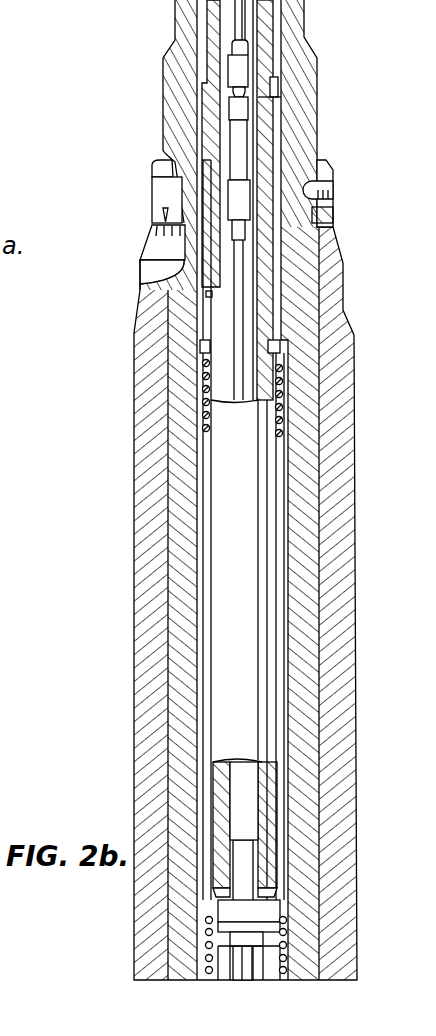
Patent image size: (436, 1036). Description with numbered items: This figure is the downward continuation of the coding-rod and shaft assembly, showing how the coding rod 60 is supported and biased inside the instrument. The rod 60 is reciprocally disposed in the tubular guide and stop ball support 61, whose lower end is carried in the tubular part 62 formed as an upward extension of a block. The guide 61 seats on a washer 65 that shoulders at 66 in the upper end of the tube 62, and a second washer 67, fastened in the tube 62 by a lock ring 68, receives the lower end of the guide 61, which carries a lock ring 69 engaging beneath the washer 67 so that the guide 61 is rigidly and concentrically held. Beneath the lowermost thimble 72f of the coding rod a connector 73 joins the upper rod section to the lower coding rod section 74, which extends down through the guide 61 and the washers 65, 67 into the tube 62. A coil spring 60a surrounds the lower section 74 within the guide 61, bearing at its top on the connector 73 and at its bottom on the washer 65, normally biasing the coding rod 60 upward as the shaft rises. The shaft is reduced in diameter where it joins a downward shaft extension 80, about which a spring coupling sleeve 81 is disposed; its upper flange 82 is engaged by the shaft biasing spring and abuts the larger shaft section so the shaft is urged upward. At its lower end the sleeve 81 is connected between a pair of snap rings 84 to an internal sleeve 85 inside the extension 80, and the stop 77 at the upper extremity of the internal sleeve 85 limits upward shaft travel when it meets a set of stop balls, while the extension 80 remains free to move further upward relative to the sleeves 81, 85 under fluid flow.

The coding rod 60 is at (345, 0).
The coil spring 60a is at (253, 268).
The tubular guide and stop ball support 61 is at (253, 22).
The tubular part 62 is at (278, 975).
The washer 65 is at (282, 948).
The shoulder 66 is at (215, 957).
The second washer 67 is at (215, 936).
The lock ring 68 is at (215, 922).
The lock ring 69 is at (282, 932).
The thimble 72f is at (245, 68).
The connector 73 is at (243, 132).
The lower coding rod section 74 is at (243, 300).
The stop 77 is at (210, 98).
The shaft extension 80 is at (280, 372).
The spring coupling sleeve 81 is at (284, 400).
The flange 82 is at (282, 349).
The snap rings 84 is at (272, 906).
The internal sleeve 85 is at (203, 403).